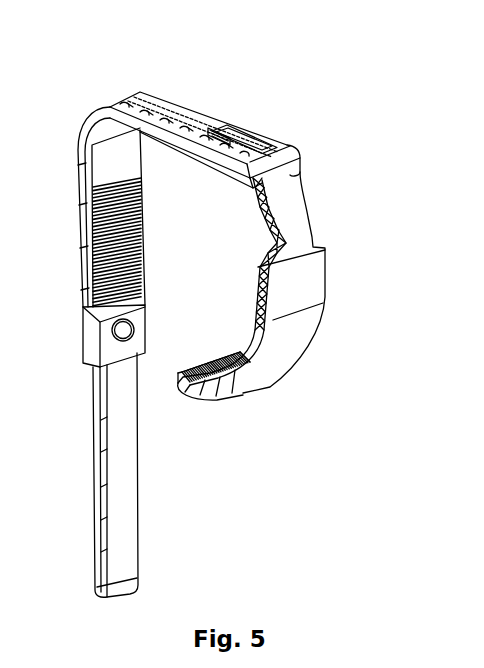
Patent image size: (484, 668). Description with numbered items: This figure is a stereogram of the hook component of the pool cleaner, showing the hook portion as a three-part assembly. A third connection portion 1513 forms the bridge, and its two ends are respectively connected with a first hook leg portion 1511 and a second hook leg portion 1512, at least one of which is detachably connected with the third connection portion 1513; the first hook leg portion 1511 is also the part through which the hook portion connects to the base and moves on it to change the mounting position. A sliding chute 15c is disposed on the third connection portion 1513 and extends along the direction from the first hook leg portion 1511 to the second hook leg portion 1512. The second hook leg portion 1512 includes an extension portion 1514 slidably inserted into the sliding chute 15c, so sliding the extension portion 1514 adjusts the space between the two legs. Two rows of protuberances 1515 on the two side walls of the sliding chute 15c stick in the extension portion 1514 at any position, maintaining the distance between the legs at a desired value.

The first hook leg portion 1511 is at (127, 247).
The second hook leg portion 1512 is at (300, 233).
The third connection portion 1513 is at (205, 111).
The extension portion 1514 is at (247, 147).
The protuberances 1515 is at (143, 113).
The sliding chute 15c is at (177, 110).